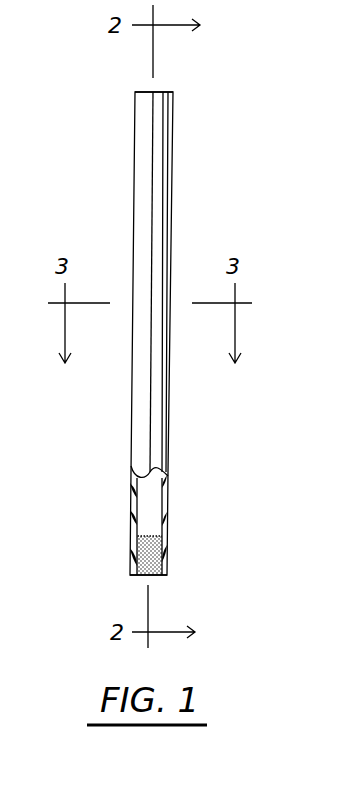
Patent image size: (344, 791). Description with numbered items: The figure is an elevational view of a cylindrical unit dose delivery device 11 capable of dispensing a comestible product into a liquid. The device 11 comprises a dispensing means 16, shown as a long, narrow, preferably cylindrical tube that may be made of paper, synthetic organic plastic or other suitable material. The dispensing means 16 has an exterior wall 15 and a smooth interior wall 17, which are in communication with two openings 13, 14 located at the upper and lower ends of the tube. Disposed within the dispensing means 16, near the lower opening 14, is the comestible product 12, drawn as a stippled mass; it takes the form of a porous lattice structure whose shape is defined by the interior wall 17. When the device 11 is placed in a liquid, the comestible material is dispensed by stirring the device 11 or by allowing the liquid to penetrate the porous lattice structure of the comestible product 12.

The device 11 is at (183, 174).
The comestible product 12 is at (155, 547).
The opening 13 is at (157, 92).
The opening 14 is at (140, 578).
The exterior wall 15 is at (168, 497).
The dispensing means 16 is at (143, 237).
The interior wall 17 is at (133, 512).